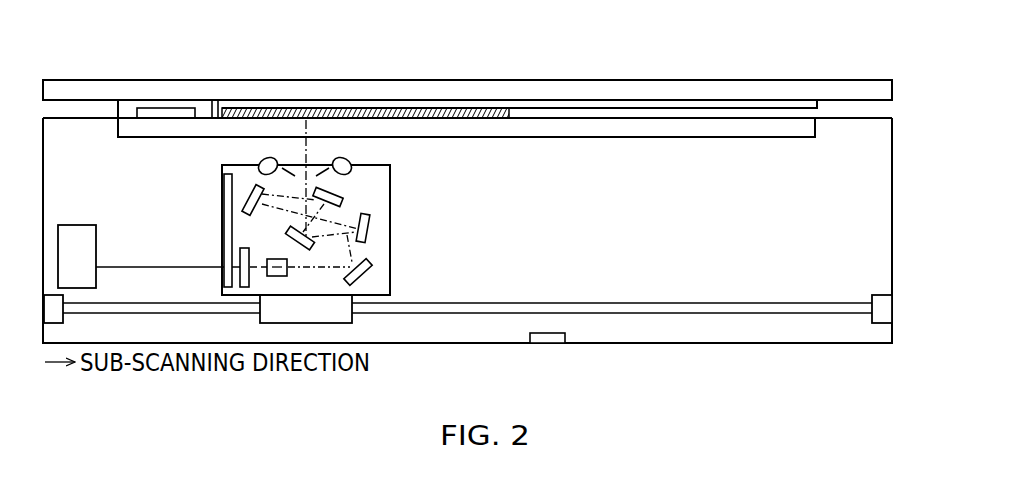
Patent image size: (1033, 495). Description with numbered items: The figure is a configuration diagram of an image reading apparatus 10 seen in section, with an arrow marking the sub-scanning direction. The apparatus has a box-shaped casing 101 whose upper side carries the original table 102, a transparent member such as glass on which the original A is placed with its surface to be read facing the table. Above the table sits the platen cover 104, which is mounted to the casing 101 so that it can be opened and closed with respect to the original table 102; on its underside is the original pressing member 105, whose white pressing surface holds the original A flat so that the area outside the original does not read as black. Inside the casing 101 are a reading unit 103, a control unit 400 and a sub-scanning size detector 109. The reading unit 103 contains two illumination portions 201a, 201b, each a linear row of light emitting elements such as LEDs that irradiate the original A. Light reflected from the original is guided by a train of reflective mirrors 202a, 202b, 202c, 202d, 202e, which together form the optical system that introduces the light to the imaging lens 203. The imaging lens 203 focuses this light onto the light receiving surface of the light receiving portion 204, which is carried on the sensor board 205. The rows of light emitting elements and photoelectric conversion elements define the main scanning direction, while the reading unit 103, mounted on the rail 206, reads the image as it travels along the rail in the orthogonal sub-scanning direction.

The image reading apparatus 10 is at (138, 60).
The casing 101 is at (892, 228).
The original table 102 is at (803, 137).
The reading unit 103 is at (390, 233).
The platen cover 104 is at (648, 80).
The original pressing member 105 is at (714, 100).
The original A is at (468, 109).
The sub-scanning size detector 109 is at (565, 341).
The illumination portion 201a is at (258, 163).
The illumination portion 201b is at (347, 160).
The reflective mirror 202a is at (313, 246).
The reflective mirror 202b is at (367, 222).
The reflective mirror 202c is at (248, 205).
The reflective mirror 202d is at (348, 202).
The reflective mirror 202e is at (370, 272).
The imaging lens 203 is at (280, 260).
The light receiving portion 204 is at (225, 257).
The sensor board 205 is at (222, 256).
The rail 206 is at (693, 302).
The control unit 400 is at (78, 225).